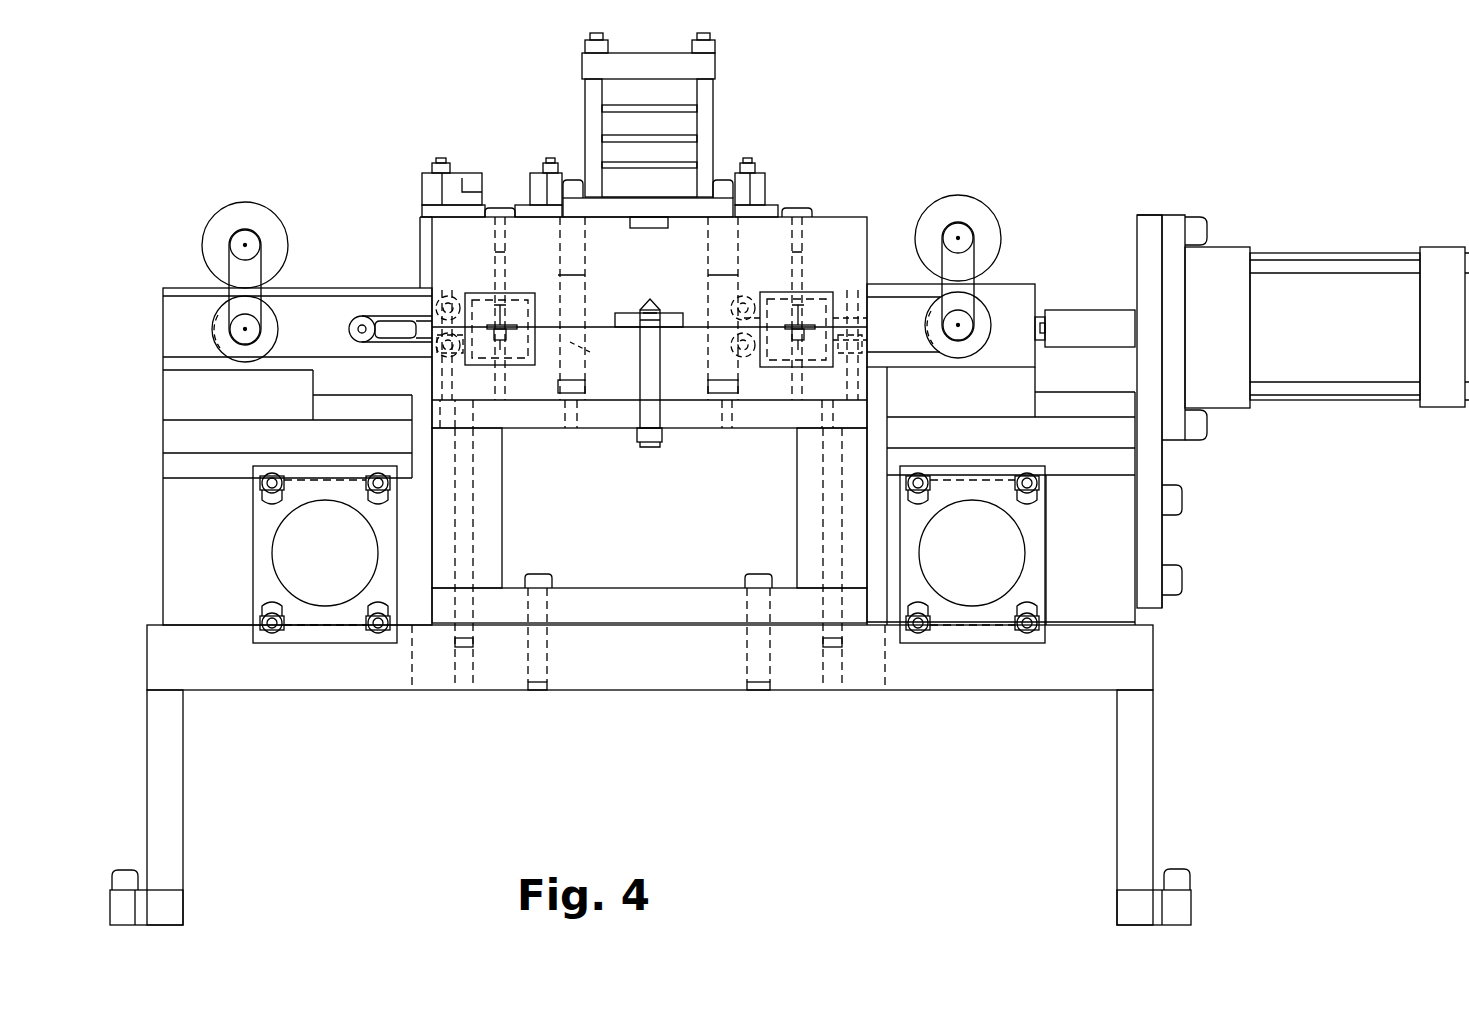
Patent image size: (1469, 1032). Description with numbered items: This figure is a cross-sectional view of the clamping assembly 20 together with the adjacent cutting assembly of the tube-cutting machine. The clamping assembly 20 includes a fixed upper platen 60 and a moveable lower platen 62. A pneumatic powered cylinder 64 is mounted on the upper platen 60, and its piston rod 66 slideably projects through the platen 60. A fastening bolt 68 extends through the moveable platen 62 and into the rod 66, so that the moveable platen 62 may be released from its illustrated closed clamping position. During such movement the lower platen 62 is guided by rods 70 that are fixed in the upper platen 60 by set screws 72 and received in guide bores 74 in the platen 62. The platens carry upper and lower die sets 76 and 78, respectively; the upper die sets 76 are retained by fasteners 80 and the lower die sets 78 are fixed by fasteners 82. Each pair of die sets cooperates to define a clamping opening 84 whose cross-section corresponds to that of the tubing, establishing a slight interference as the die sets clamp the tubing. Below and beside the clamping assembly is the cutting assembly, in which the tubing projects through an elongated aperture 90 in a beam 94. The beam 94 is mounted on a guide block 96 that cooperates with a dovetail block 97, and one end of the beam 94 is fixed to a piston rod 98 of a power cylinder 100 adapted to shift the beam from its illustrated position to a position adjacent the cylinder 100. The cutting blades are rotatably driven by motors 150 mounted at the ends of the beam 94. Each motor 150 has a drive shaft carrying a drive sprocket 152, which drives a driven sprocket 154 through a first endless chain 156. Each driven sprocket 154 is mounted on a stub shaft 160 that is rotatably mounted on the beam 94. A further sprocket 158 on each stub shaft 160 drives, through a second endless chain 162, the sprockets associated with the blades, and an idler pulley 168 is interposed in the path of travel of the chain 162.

The clamping assembly 20 is at (768, 101).
The upper platen 60 is at (445, 230).
The moveable lower platen 62 is at (626, 430).
The pneumatic powered cylinder 64 is at (580, 68).
The piston rod 66 is at (650, 265).
The fastening bolt 68 is at (662, 448).
The rods 70 is at (556, 285).
The set screws 72 is at (578, 304).
The guide bores 74 is at (585, 348).
The upper die sets 76 is at (477, 298).
The lower die sets 78 is at (527, 350).
The fasteners 80 is at (503, 207).
The fasteners 82 is at (505, 340).
The clamping opening 84 is at (500, 325).
The elongated aperture 90 is at (400, 318).
The beam 94 is at (200, 315).
The guide block 96 is at (890, 375).
The dovetail block 97 is at (1137, 390).
The piston rod 98 is at (1085, 330).
The power cylinder 100 is at (1330, 318).
The motors 150 is at (212, 215).
The drive sprocket 152 is at (245, 230).
The driven sprocket 154 is at (230, 320).
The first endless chain 156 is at (228, 263).
The sprocket 158 is at (238, 370).
The stub shaft 160 is at (300, 395).
The second endless chain 162 is at (300, 290).
The idler pulley 168 is at (357, 340).